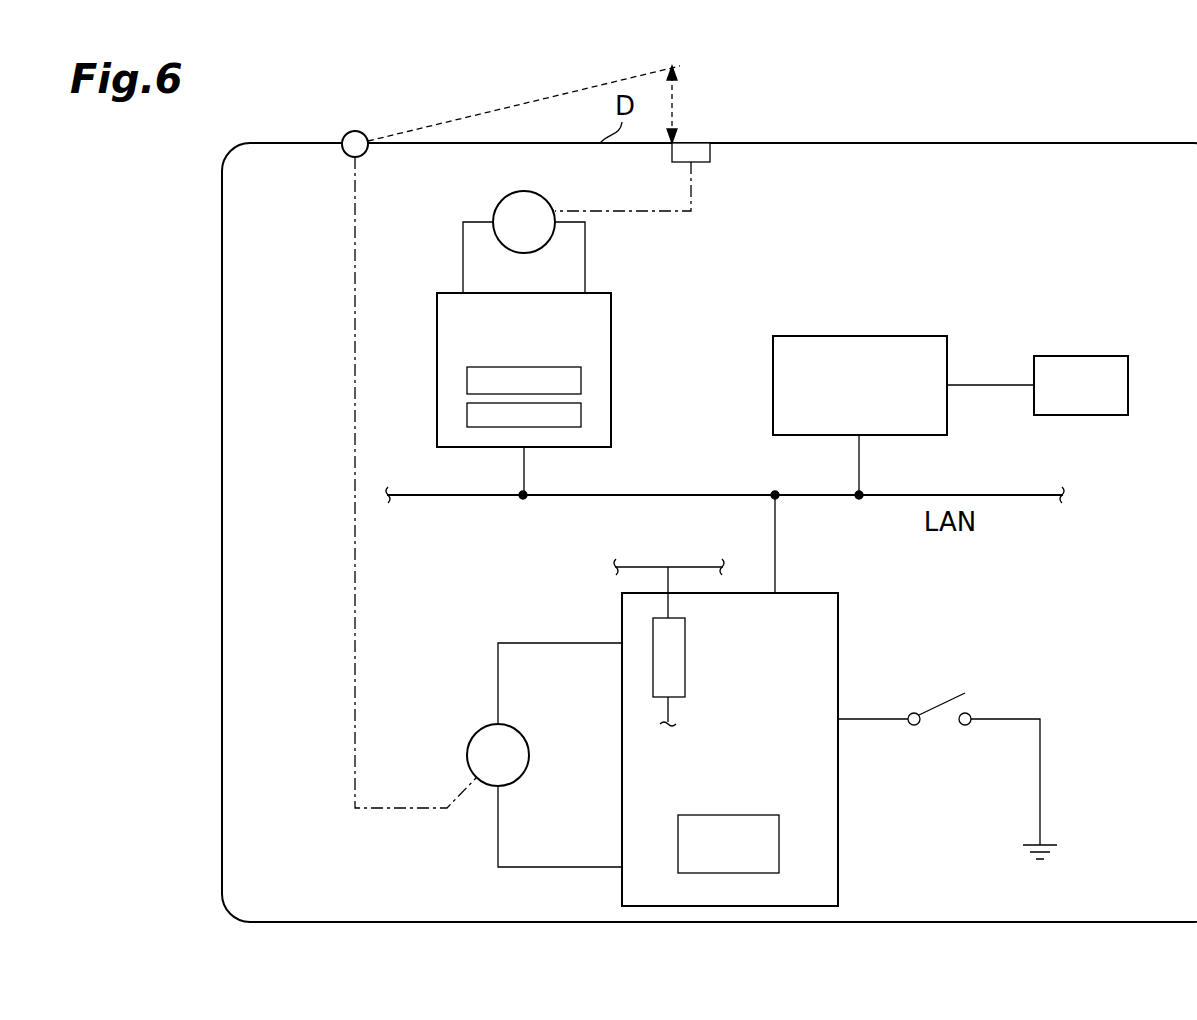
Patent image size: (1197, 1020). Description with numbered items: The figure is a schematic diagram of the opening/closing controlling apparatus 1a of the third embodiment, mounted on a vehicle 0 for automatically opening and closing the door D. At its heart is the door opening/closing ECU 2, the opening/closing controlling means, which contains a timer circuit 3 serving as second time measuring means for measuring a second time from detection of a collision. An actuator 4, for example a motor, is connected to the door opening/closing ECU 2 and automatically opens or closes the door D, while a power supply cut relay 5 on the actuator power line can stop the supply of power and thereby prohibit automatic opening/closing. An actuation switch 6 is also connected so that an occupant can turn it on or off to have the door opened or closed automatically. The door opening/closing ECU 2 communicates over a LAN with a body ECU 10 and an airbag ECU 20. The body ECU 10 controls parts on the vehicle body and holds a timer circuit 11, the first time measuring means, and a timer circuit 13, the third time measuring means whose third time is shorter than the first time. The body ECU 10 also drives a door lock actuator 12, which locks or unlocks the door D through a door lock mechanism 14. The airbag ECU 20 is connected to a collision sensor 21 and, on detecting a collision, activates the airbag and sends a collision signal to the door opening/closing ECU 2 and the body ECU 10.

The vehicle 0 is at (980, 143).
The opening/closing controlling apparatus 1a is at (1078, 252).
The door opening/closing ECU 2 is at (838, 628).
The timer circuit 3 is at (779, 843).
The actuator 4 is at (467, 752).
The power supply cut relay 5 is at (652, 637).
The actuation switch 6 is at (938, 706).
The body ECU 10 is at (596, 293).
The timer circuit 11 is at (581, 378).
The door lock actuator 12 is at (548, 197).
The timer circuit 13 is at (581, 413).
The door lock mechanism 14 is at (706, 153).
The airbag ECU 20 is at (905, 336).
The collision sensor 21 is at (1095, 356).